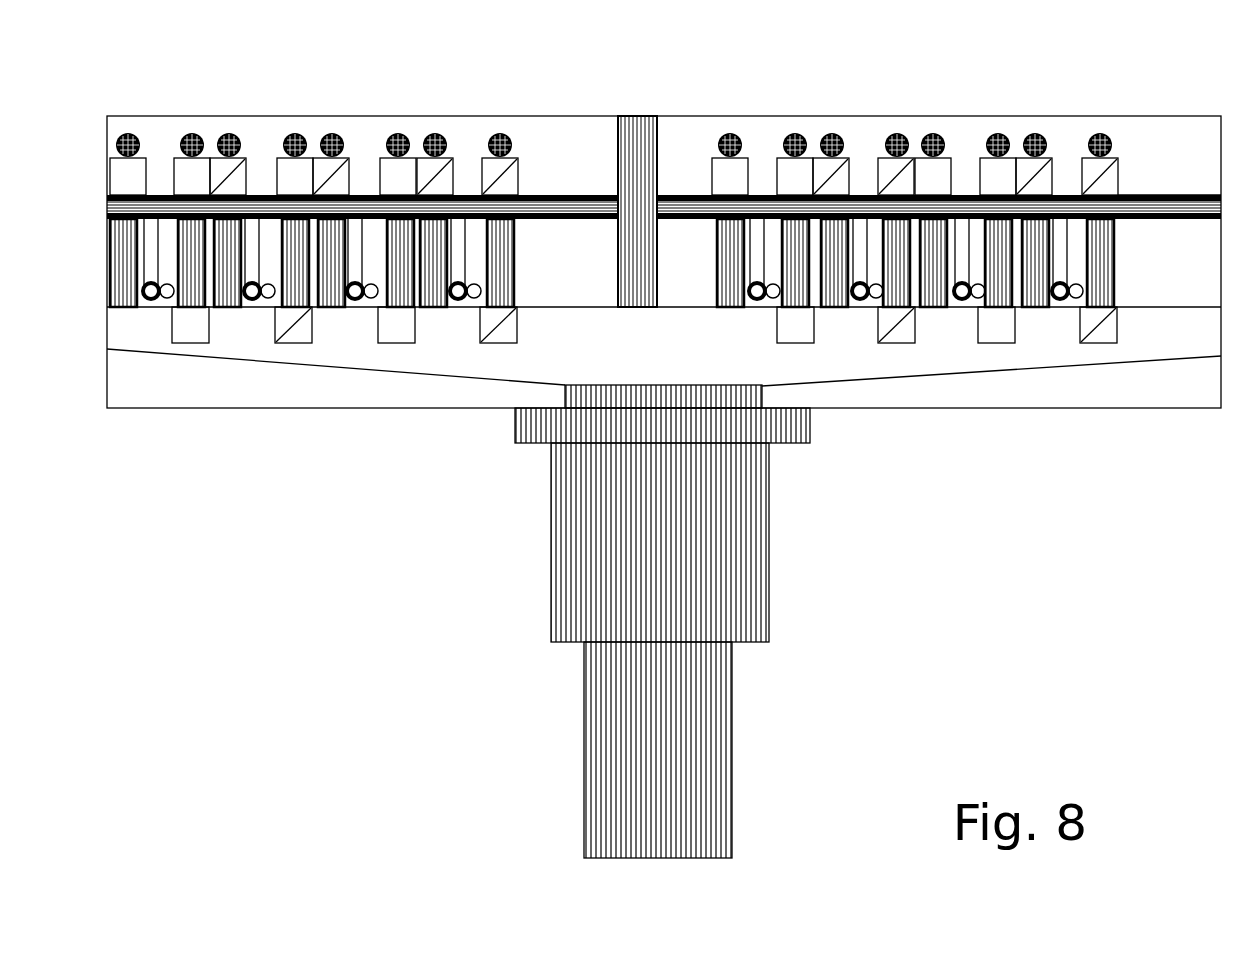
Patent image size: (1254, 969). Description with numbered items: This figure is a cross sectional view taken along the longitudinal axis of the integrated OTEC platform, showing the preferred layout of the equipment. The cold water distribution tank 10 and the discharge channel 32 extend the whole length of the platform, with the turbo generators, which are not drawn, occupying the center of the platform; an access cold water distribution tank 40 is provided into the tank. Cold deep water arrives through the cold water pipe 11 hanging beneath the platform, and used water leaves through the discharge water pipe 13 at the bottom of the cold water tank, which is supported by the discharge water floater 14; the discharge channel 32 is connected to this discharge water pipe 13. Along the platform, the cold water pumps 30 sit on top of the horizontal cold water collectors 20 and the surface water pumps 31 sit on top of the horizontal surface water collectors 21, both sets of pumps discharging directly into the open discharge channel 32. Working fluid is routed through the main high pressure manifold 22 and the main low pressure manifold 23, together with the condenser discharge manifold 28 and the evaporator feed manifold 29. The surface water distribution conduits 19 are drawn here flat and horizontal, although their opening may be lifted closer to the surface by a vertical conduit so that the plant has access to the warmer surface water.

The cold water distribution tank 10 is at (340, 357).
The cold water pipe 11 is at (672, 720).
The discharge water pipe 13 is at (731, 509).
The discharge water floater 14 is at (810, 427).
The surface water distribution conduit 19 is at (308, 312).
The horizontal cold water collector 20 is at (128, 172).
The horizontal surface water collector 21 is at (284, 190).
The main high pressure manifold 22 is at (537, 203).
The main low pressure manifold 23 is at (1135, 198).
The condenser discharge manifold 28 is at (455, 299).
The evaporator feed manifold 29 is at (472, 299).
The cold water pump 30 is at (440, 142).
The surface water pump 31 is at (898, 150).
The discharge channel 32 is at (415, 390).
The access cold water distribution tank 40 is at (640, 133).